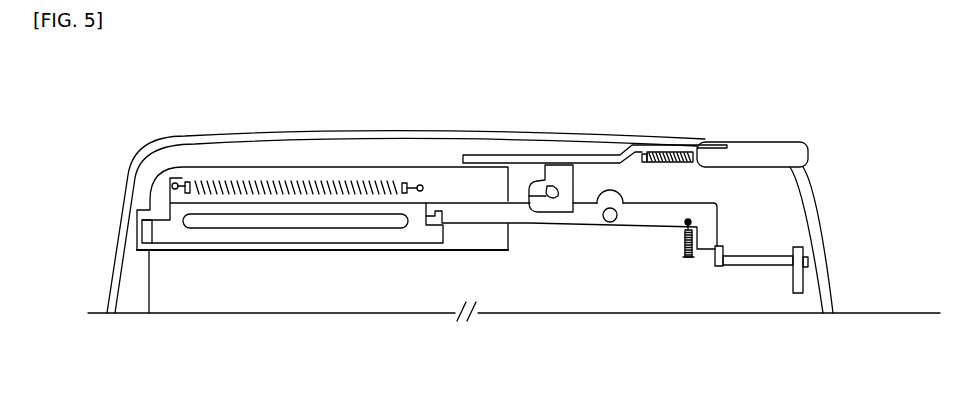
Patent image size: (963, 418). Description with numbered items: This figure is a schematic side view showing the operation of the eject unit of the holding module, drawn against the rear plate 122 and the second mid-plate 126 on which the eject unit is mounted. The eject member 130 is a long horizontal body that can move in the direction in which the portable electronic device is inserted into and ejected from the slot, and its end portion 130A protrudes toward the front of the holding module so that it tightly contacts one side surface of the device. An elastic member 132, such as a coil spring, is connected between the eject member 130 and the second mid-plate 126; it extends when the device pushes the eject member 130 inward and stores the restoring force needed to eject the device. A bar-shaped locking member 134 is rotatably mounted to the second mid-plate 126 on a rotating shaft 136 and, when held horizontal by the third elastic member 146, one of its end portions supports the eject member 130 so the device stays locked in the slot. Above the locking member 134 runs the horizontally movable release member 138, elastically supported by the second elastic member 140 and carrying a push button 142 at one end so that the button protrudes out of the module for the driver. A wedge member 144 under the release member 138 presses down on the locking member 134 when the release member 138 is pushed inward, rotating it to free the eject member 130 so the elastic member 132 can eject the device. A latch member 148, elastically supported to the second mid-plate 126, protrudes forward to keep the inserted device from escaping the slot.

The rear plate 122 is at (132, 298).
The second mid-plate 126 is at (220, 298).
The eject member 130 is at (343, 237).
The end portion 130A is at (143, 229).
The elastic member 132 is at (300, 185).
The locking member 134 is at (490, 210).
The rotating shaft 136 is at (605, 222).
The release member 138 is at (633, 148).
The second elastic member 140 is at (685, 150).
The push button 142 is at (769, 141).
The wedge member 144 is at (560, 172).
The third elastic member 146 is at (690, 257).
The latch member 148 is at (797, 293).